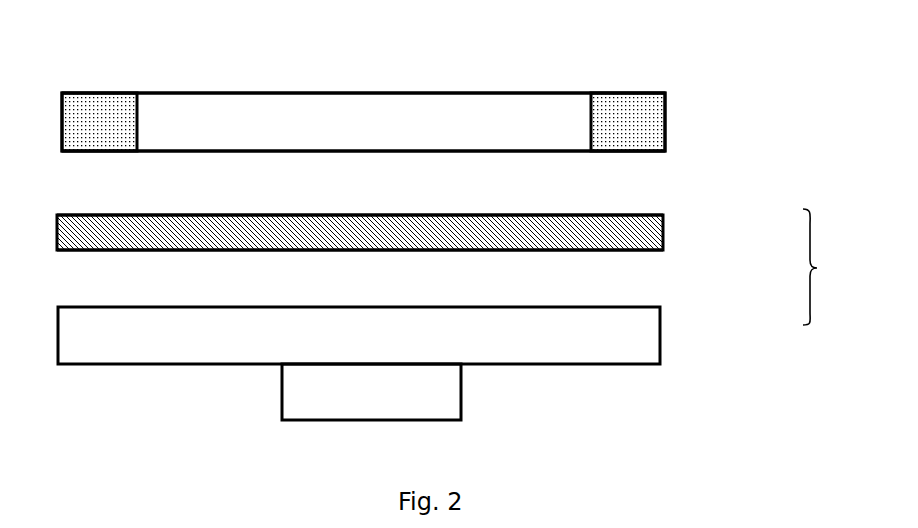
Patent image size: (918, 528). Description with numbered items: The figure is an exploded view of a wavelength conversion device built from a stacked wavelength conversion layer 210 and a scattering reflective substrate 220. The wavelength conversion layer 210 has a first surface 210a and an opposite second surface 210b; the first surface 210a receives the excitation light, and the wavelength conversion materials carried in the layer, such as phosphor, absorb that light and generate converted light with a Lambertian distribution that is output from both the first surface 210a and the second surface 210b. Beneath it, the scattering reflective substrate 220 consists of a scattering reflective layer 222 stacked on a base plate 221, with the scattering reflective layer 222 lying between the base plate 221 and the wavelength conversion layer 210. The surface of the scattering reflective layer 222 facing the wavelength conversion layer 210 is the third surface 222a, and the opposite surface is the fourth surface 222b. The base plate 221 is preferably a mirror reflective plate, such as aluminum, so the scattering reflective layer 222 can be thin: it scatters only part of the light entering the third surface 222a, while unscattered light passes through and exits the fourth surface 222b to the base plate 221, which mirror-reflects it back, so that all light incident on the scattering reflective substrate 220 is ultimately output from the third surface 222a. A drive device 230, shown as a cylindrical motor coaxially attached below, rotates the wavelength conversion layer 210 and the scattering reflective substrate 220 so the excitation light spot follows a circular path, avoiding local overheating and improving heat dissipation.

The wavelength conversion layer 210 is at (633, 113).
The first surface 210a is at (118, 92).
The second surface 210b is at (123, 152).
The scattering reflective substrate 220 is at (835, 267).
The base plate 221 is at (632, 326).
The scattering reflective layer 222 is at (633, 240).
The third surface 222a is at (362, 215).
The fourth surface 222b is at (292, 250).
The drive device 230 is at (441, 405).